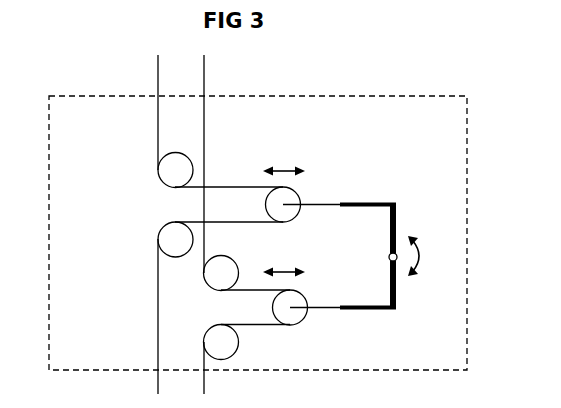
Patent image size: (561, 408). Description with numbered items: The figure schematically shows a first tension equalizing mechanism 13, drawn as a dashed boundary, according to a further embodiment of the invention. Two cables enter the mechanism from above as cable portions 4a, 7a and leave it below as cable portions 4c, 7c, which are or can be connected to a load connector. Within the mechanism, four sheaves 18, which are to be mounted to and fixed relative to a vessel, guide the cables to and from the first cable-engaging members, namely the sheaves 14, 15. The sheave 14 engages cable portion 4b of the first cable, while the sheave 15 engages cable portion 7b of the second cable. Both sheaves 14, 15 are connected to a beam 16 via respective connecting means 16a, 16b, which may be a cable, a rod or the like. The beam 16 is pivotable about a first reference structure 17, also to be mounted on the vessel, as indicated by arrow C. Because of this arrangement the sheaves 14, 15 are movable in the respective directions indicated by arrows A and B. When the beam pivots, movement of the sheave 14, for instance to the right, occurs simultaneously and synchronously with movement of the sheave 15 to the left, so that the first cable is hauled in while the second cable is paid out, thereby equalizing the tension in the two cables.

The first tension equalizing mechanism 13 is at (467, 128).
The cable portion of first cable 4a is at (157, 78).
The cable portion of first cable 4b is at (232, 186).
The cable portion of first cable 4c is at (157, 352).
The cable portion of second cable 7a is at (204, 83).
The cable portion of second cable 7b is at (257, 325).
The cable portion of second cable 7c is at (204, 378).
The sheave 14 is at (295, 197).
The sheave 15 is at (290, 313).
The beam 16 is at (397, 219).
The connecting means 16a is at (365, 203).
The connecting means 16b is at (372, 308).
The first reference structure 17 is at (389, 257).
The sheaves 18 is at (170, 172).
The direction of movement of sheave 14 A is at (283, 170).
The direction of movement of sheave 15 B is at (283, 270).
The pivoting direction of beam C is at (425, 253).